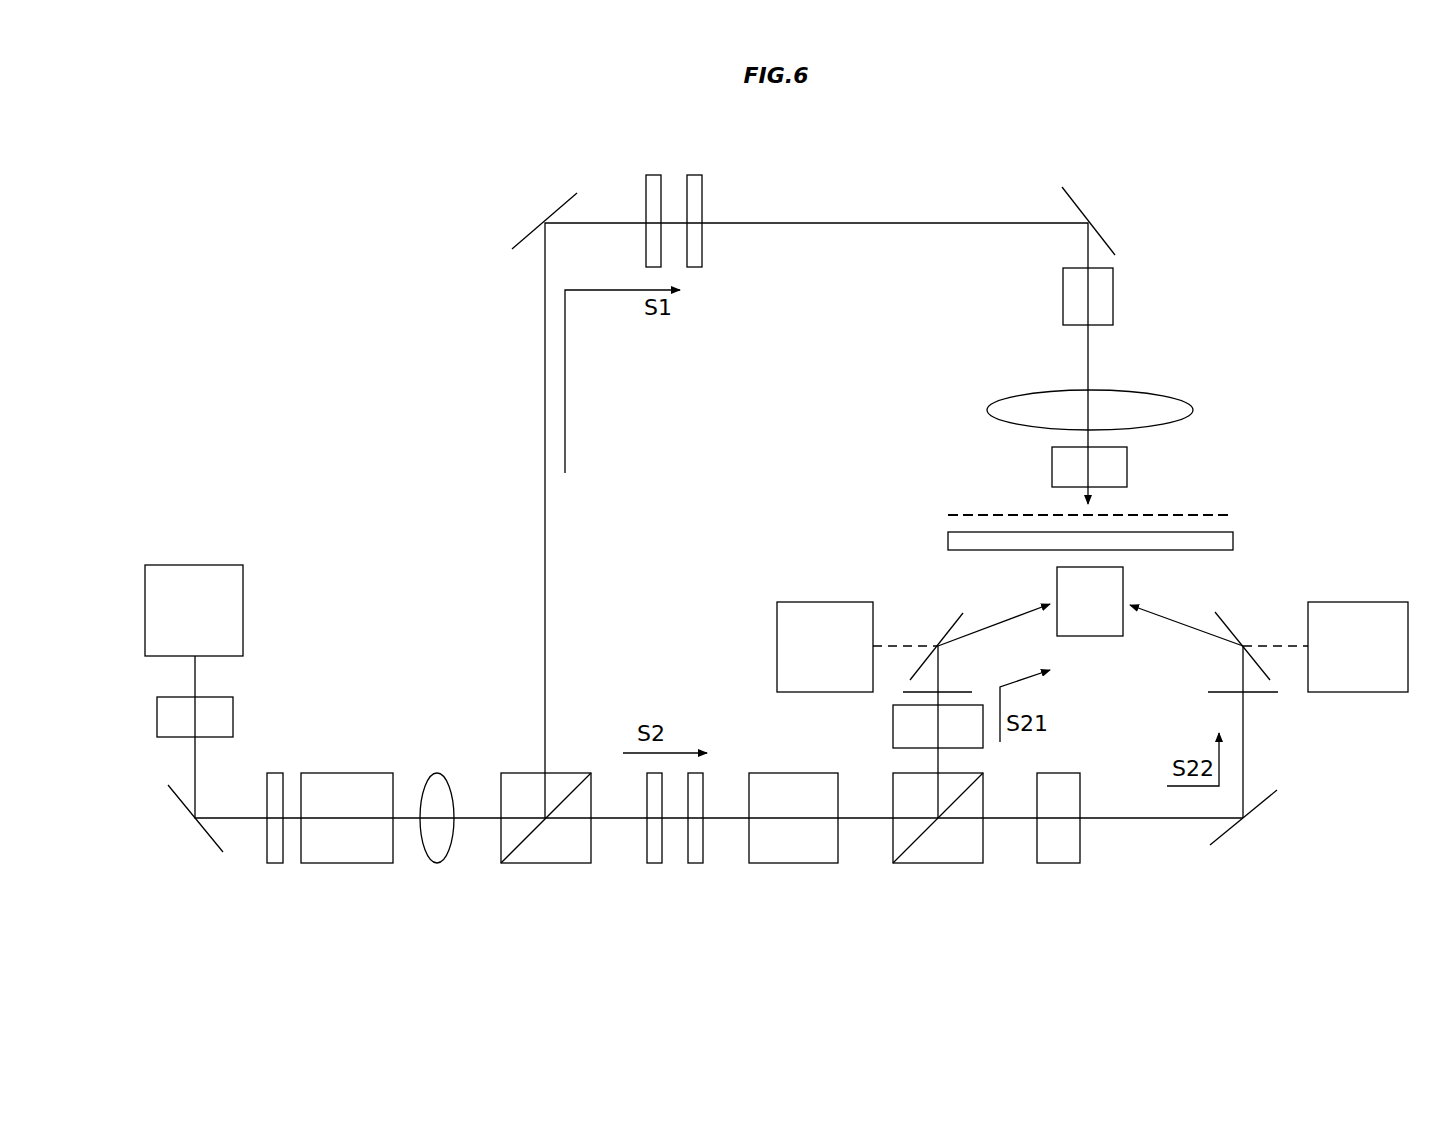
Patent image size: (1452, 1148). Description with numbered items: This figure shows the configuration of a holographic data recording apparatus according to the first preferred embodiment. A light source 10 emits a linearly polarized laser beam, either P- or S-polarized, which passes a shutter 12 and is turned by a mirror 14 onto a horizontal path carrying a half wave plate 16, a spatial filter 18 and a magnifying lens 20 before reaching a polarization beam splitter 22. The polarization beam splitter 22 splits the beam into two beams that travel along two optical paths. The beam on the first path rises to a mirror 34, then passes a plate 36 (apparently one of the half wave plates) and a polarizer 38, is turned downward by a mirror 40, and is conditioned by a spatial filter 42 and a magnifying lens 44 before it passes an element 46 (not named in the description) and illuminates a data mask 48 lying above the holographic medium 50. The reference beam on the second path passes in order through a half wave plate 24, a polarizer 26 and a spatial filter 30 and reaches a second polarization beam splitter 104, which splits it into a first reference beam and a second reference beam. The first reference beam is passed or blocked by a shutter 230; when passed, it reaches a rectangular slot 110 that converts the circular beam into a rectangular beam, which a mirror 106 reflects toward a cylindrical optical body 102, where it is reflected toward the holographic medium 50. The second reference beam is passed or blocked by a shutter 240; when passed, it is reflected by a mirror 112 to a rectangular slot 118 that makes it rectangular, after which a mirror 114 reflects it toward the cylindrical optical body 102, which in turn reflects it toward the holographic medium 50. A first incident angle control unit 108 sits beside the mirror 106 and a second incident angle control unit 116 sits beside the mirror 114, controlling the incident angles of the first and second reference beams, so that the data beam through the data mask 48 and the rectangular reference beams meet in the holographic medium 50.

The light source 10 is at (243, 604).
The shutter 12 is at (233, 717).
The mirror 14 is at (212, 848).
The half wave plate 16 is at (276, 863).
The spatial filter 18 is at (347, 863).
The magnifying lens 20 is at (437, 863).
The polarization beam splitter 22 is at (545, 863).
The half wave plate 24 is at (654, 863).
The polarizer 26 is at (696, 863).
The spatial filter 30 is at (793, 863).
The mirror 34 is at (528, 228).
The plate 36 is at (653, 175).
The polarizer 38 is at (694, 175).
The mirror 40 is at (1105, 242).
The spatial filter 42 is at (1113, 295).
The magnifying lens 44 is at (1147, 397).
The optical element 46 is at (1052, 467).
The data mask 48 is at (1205, 513).
The holographic medium 50 is at (1233, 541).
The cylindrical optical body 102 is at (1090, 636).
The polarization beam splitter 104 is at (938, 863).
The mirror 106 is at (952, 628).
The first incident angle control unit 108 is at (777, 648).
The rectangular slot 110 is at (955, 690).
The mirror 112 is at (1228, 832).
The mirror 114 is at (1237, 627).
The second incident angle control unit 116 is at (1358, 692).
The rectangular slot 118 is at (1222, 690).
The shutter 230 is at (893, 728).
The shutter 240 is at (1058, 863).